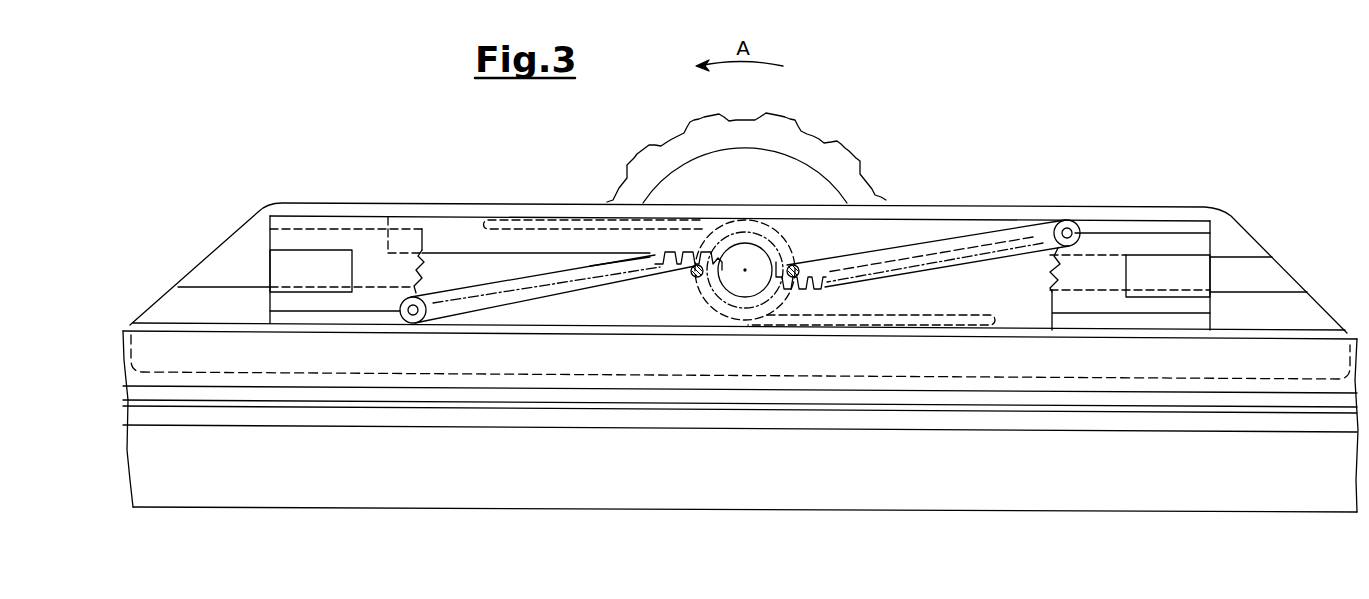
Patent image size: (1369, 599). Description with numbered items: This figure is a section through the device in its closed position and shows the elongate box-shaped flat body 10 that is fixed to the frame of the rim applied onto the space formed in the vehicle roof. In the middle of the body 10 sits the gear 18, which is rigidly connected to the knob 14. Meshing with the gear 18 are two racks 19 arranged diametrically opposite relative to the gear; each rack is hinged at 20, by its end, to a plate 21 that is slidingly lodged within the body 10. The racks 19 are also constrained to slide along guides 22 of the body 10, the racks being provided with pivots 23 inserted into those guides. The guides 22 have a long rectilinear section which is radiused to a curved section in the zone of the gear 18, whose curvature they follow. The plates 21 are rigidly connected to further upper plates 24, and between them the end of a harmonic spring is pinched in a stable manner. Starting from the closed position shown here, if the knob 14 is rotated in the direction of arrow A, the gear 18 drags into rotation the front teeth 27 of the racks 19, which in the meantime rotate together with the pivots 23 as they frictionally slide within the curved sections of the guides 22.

The body 10 is at (990, 212).
The knob 14 is at (818, 155).
The gear 18 is at (748, 262).
The racks 19 is at (538, 290).
The hinge 20 is at (415, 323).
The plates 21 is at (370, 245).
The guides 22 is at (569, 226).
The pivots 23 is at (693, 276).
The upper plates 24 is at (315, 255).
The front teeth 27 is at (712, 253).